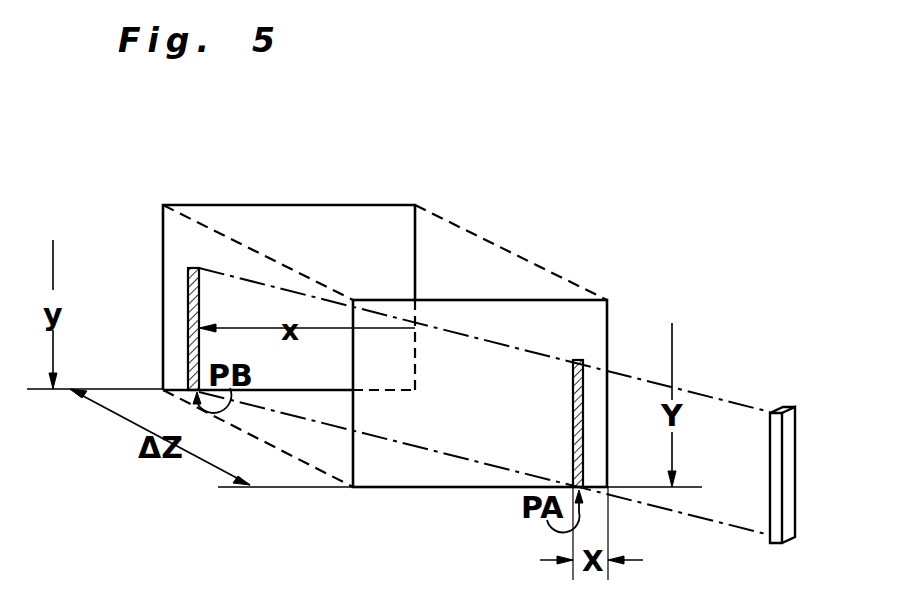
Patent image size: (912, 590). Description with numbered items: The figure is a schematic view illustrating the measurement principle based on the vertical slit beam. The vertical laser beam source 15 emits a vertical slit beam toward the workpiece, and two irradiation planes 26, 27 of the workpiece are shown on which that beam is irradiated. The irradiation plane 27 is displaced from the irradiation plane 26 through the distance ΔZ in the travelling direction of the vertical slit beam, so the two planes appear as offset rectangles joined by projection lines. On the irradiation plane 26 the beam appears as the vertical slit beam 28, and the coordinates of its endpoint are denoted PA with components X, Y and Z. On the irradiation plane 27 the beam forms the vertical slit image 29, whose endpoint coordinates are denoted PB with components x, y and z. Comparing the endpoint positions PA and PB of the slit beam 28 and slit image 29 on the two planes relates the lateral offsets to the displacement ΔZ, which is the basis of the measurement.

The vertical laser beam source 15 is at (787, 465).
The irradiation plane 26 is at (587, 323).
The irradiation plane 27 is at (398, 205).
The vertical slit beam 28 is at (573, 425).
The vertical slit image 29 is at (188, 297).